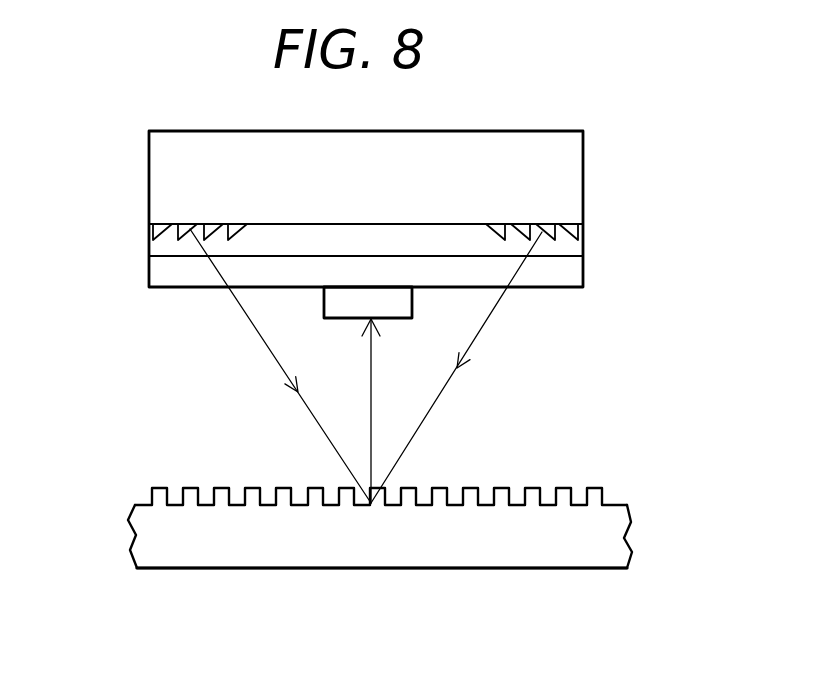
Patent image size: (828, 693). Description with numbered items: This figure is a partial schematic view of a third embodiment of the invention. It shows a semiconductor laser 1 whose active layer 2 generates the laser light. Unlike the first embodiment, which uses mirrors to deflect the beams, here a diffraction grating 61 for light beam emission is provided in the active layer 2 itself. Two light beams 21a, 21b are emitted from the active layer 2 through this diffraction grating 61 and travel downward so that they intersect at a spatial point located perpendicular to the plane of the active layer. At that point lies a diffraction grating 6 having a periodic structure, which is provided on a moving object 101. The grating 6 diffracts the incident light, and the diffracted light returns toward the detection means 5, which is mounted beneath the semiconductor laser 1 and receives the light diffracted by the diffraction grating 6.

The semiconductor laser 1 is at (570, 148).
The active layer 2 is at (570, 247).
The diffraction grating for light beam emission 61 is at (570, 223).
The detection means 5 is at (397, 303).
The light beam 21a is at (493, 313).
The light beam 21b is at (261, 341).
The diffraction grating 6 is at (593, 497).
The moving object 101 is at (613, 545).